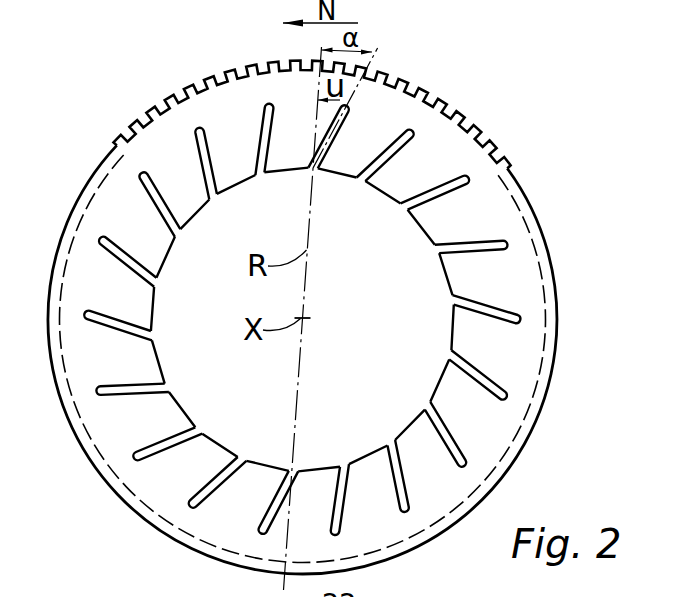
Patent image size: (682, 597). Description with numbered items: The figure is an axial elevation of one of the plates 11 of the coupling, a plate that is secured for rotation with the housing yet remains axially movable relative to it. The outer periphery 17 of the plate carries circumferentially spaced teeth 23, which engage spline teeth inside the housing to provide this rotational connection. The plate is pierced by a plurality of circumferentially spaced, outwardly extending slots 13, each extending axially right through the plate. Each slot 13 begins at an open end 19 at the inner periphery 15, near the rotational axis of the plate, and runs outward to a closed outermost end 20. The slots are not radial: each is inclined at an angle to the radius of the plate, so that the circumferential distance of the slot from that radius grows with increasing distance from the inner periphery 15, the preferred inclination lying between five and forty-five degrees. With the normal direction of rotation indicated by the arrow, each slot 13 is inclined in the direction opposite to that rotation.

The plate 11 is at (489, 210).
The slot 13 is at (266, 103).
The inner periphery 15 is at (284, 168).
The outer periphery 17 is at (560, 299).
The open end 19 is at (314, 168).
The outermost end 20 is at (349, 108).
The teeth 23 is at (489, 143).